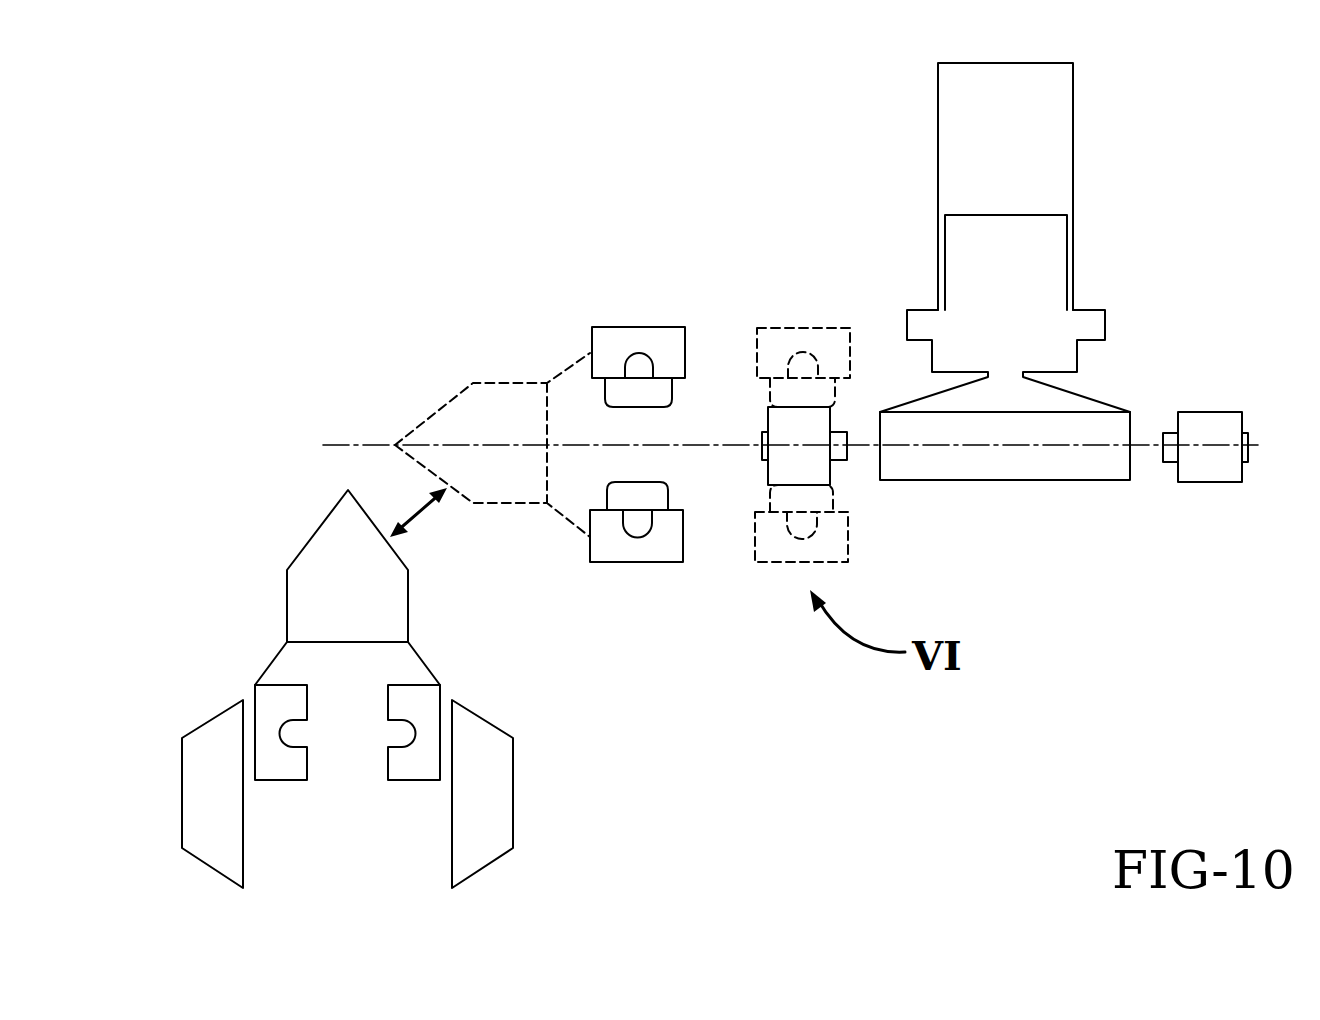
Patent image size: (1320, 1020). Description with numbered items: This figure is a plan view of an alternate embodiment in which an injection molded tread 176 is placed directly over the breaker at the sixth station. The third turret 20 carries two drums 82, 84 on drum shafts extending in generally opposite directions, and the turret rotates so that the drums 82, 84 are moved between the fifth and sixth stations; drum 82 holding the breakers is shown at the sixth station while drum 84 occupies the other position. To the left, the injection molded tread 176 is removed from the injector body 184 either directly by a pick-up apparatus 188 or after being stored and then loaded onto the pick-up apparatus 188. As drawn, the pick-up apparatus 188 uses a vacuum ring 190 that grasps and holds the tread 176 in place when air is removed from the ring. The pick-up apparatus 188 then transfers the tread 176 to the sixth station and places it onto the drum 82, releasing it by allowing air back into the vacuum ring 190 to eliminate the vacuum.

The third turret 20 is at (1028, 467).
The drum 82 is at (813, 423).
The drum 84 is at (1217, 465).
The injection molded tread 176 is at (772, 397).
The injector body 184 is at (500, 795).
The pick-up apparatus 188 is at (323, 520).
The vacuum ring 190 is at (637, 367).